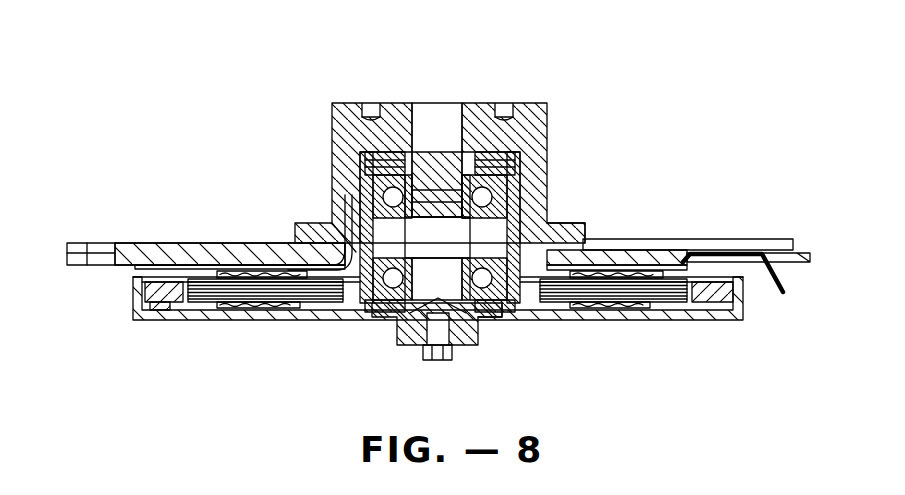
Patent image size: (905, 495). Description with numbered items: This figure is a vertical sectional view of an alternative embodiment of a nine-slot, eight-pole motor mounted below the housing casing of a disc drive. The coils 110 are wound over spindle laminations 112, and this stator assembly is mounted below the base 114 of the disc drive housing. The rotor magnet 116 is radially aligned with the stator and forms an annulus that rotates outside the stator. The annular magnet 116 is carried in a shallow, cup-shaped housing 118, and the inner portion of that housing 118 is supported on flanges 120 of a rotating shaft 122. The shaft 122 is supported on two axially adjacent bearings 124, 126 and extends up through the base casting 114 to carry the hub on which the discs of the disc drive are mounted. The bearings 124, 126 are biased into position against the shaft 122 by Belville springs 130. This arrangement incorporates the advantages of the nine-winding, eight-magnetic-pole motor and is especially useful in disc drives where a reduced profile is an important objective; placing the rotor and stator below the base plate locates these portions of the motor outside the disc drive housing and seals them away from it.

The coils 110 is at (250, 303).
The spindle laminations 112 is at (667, 250).
The base 114 is at (140, 268).
The rotor magnet 116 is at (727, 288).
The cup-shaped housing 118 is at (740, 305).
The flanges 120 is at (735, 252).
The rotating shaft 122 is at (446, 115).
The bearing 124 is at (490, 195).
The bearing 126 is at (547, 240).
The Belville springs 130 is at (358, 230).